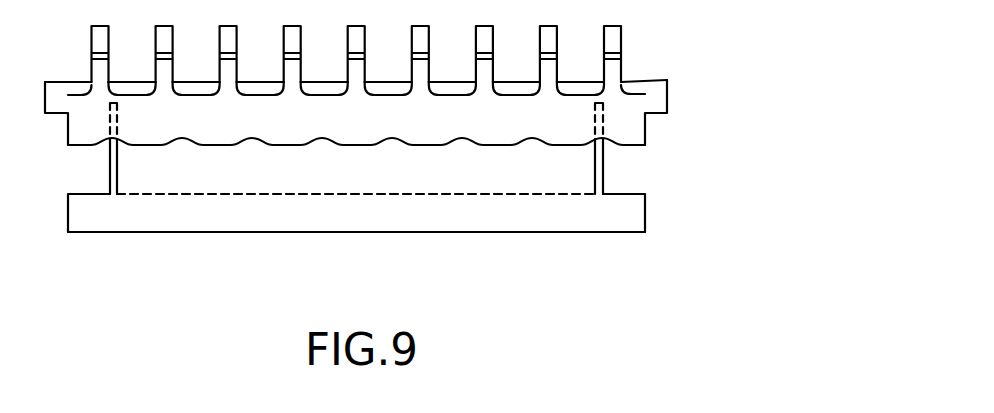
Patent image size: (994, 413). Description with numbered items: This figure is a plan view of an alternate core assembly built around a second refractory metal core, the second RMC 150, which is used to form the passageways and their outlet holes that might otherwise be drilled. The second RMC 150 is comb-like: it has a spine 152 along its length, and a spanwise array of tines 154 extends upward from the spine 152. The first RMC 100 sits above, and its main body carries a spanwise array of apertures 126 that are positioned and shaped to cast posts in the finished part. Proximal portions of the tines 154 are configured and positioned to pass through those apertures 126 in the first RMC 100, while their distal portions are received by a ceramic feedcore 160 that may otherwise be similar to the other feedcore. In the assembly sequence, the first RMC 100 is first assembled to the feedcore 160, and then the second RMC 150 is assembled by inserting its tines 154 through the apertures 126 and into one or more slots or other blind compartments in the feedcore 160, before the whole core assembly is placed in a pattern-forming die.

The RMC 100 is at (678, 132).
The ceramic feedcore 160 is at (695, 83).
The tines 154 is at (598, 170).
The apertures 126 is at (590, 148).
The second RMC 150 is at (675, 213).
The spine 152 is at (617, 217).